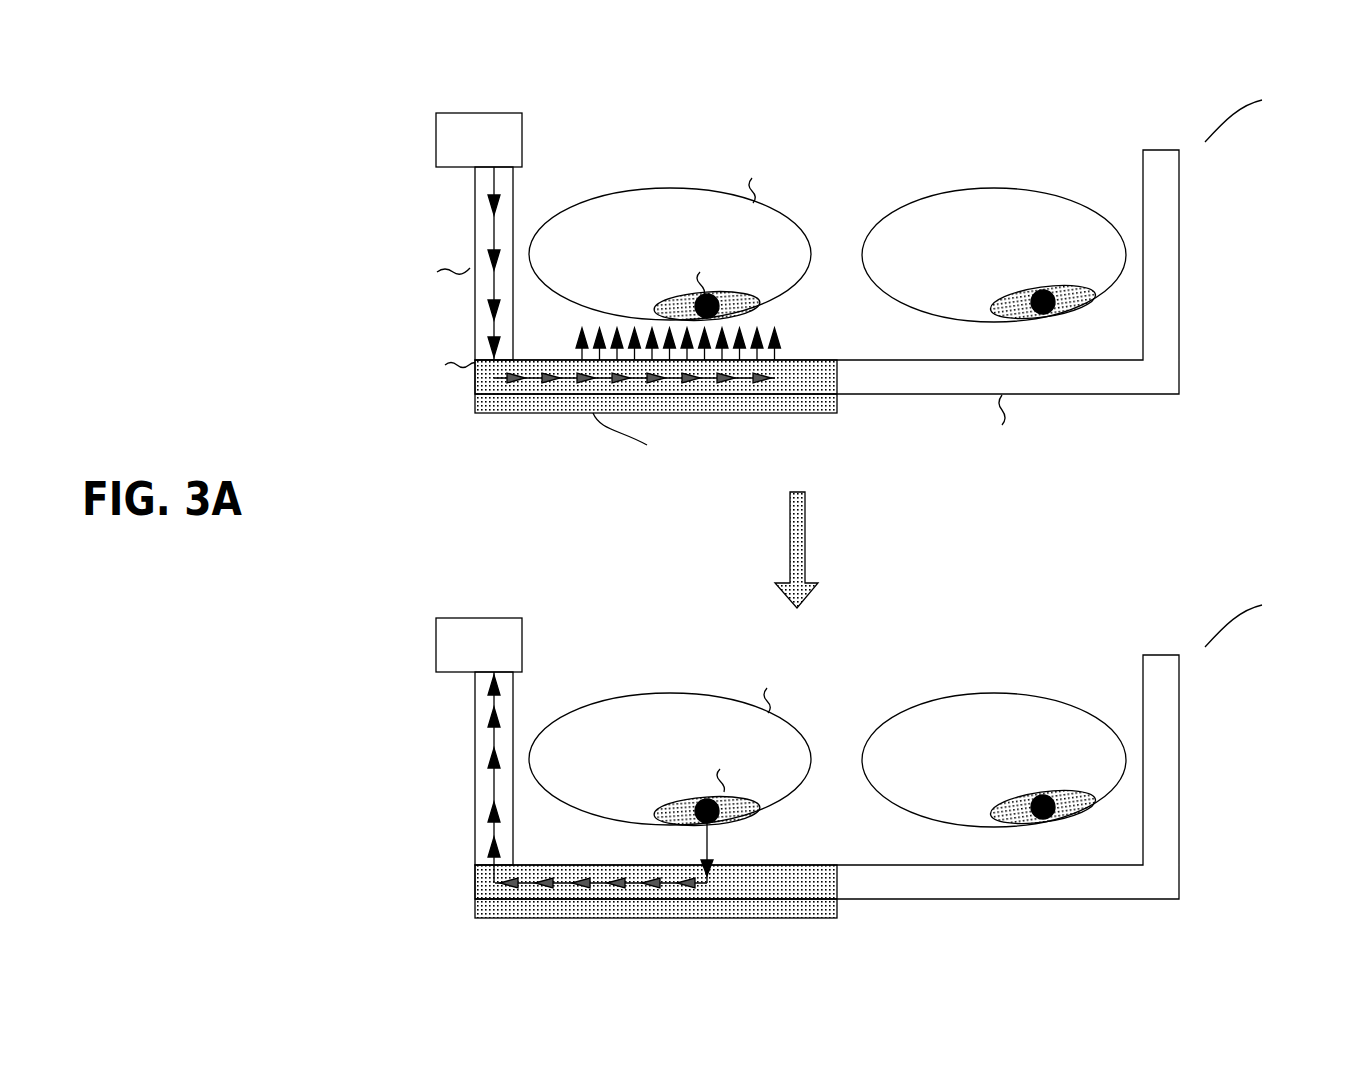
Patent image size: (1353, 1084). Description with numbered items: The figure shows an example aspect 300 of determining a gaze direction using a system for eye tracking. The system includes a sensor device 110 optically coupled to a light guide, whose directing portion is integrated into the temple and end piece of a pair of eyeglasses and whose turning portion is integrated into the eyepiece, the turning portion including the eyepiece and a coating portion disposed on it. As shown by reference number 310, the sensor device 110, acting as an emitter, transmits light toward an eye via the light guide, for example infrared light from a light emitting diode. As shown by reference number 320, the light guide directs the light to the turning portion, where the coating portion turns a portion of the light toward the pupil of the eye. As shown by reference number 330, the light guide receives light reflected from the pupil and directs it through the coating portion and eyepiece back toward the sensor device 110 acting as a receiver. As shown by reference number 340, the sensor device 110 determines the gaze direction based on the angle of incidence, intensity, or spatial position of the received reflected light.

The example aspect 300 is at (180, 63).
The sensor device 110 is at (593, 125).
The transmitting light toward eye via light guide 310 is at (368, 105).
The directing light toward pupil of eye 320 is at (565, 387).
The directing reflected light toward sensor device 330 is at (493, 887).
The determining gaze direction based on received reflected light 340 is at (359, 619).